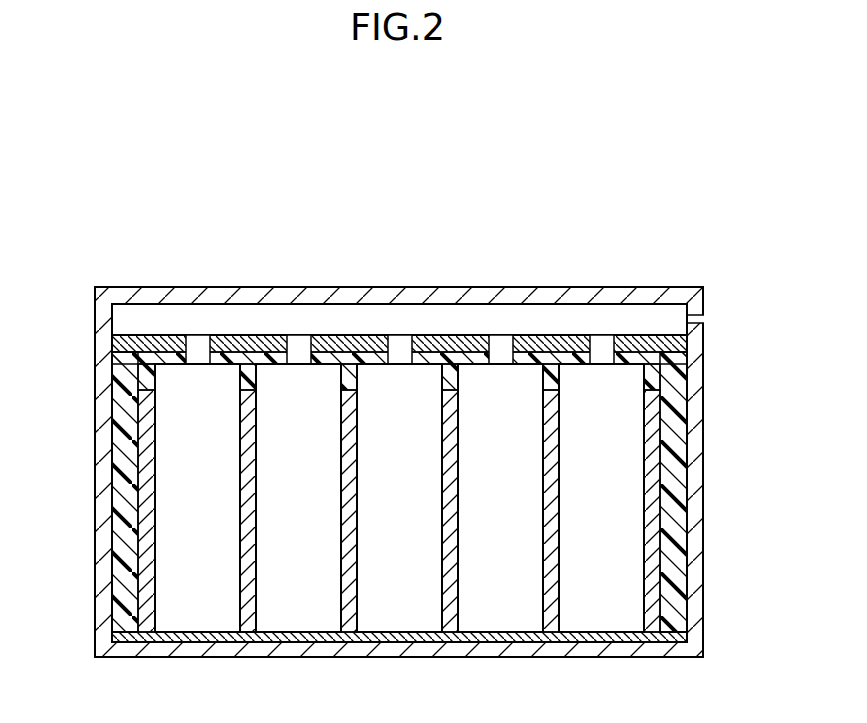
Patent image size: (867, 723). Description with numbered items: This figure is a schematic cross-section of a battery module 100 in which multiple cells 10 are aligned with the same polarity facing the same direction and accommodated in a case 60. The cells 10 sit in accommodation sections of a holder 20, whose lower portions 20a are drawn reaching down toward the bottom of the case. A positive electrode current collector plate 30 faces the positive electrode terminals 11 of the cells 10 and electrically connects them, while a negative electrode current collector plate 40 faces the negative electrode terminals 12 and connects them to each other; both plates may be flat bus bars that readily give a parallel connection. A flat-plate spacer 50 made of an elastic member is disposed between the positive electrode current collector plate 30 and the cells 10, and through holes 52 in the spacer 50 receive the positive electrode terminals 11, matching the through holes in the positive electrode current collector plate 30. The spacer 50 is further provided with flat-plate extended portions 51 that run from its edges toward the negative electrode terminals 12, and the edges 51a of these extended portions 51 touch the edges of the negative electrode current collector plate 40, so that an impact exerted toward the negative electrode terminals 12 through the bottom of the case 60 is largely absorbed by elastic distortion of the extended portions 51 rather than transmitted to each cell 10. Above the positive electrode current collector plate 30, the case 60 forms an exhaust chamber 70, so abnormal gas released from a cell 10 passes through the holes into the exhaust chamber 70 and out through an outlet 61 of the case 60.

The battery module 100 is at (581, 176).
The cell 10 is at (298, 597).
The positive electrode terminal 11 is at (300, 345).
The negative electrode terminal 12 is at (392, 628).
The holder 20 is at (247, 402).
The lower end of separator 20a is at (250, 628).
The positive electrode current collector plate 30 is at (358, 347).
The negative electrode current collector plate 40 is at (508, 635).
The spacer 50 is at (457, 357).
The extended portion 51 is at (120, 437).
The edge of extended portion 51a is at (126, 630).
The through hole 52 is at (553, 375).
The case 60 is at (603, 287).
The outlet 61 is at (705, 320).
The exhaust chamber 70 is at (665, 318).